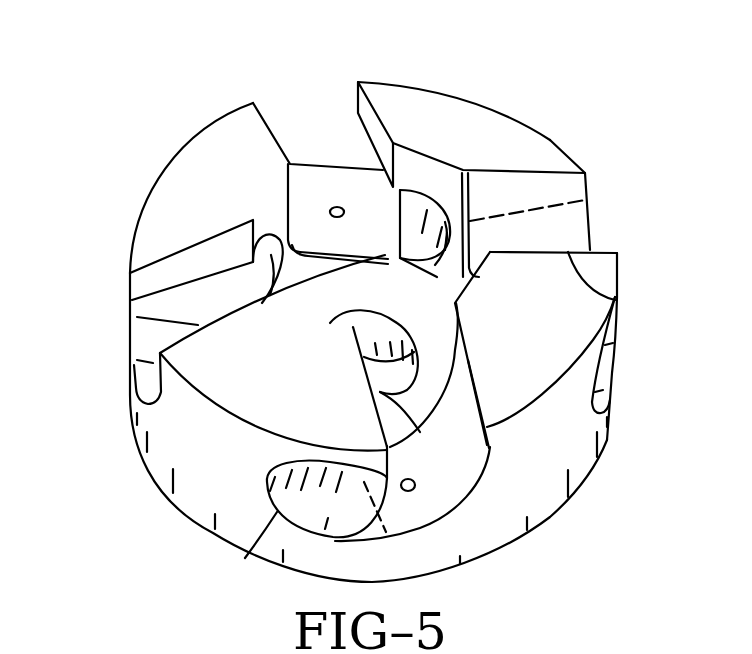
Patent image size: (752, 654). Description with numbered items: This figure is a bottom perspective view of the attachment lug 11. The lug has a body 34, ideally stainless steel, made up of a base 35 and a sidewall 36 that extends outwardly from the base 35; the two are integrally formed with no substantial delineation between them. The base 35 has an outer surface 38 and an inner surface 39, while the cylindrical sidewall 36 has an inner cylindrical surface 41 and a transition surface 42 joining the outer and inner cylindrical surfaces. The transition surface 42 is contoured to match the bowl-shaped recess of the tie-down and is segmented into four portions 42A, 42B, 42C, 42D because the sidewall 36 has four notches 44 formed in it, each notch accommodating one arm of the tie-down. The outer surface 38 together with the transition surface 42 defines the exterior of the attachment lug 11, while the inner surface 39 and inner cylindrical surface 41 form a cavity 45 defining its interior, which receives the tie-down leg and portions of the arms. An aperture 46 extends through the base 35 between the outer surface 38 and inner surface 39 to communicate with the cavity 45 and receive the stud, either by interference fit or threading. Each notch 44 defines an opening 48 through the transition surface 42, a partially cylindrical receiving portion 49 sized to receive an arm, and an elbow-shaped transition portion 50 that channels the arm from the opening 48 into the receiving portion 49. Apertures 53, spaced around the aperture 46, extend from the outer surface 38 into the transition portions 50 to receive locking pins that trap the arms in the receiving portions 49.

The attachment lug 11 is at (109, 105).
The body 34 is at (176, 510).
The base 35 is at (500, 537).
The sidewall 36 is at (557, 445).
The outer surface 38 is at (550, 520).
The inner surface 39 is at (389, 308).
The inner cylindrical surface 41 is at (295, 255).
The transition surface 42 is at (201, 404).
The portion of transition surface 42A is at (250, 386).
The portion of transition surface 42B is at (498, 312).
The portion of transition surface 42C is at (482, 140).
The portion of transition surface 42D is at (172, 204).
The notches 44 is at (322, 150).
The cavity 45 is at (378, 266).
The aperture 46 is at (420, 432).
The openings 48 is at (250, 108).
The receiving portions 49 is at (447, 208).
The transition portions 50 is at (405, 272).
The apertures 53 is at (337, 206).